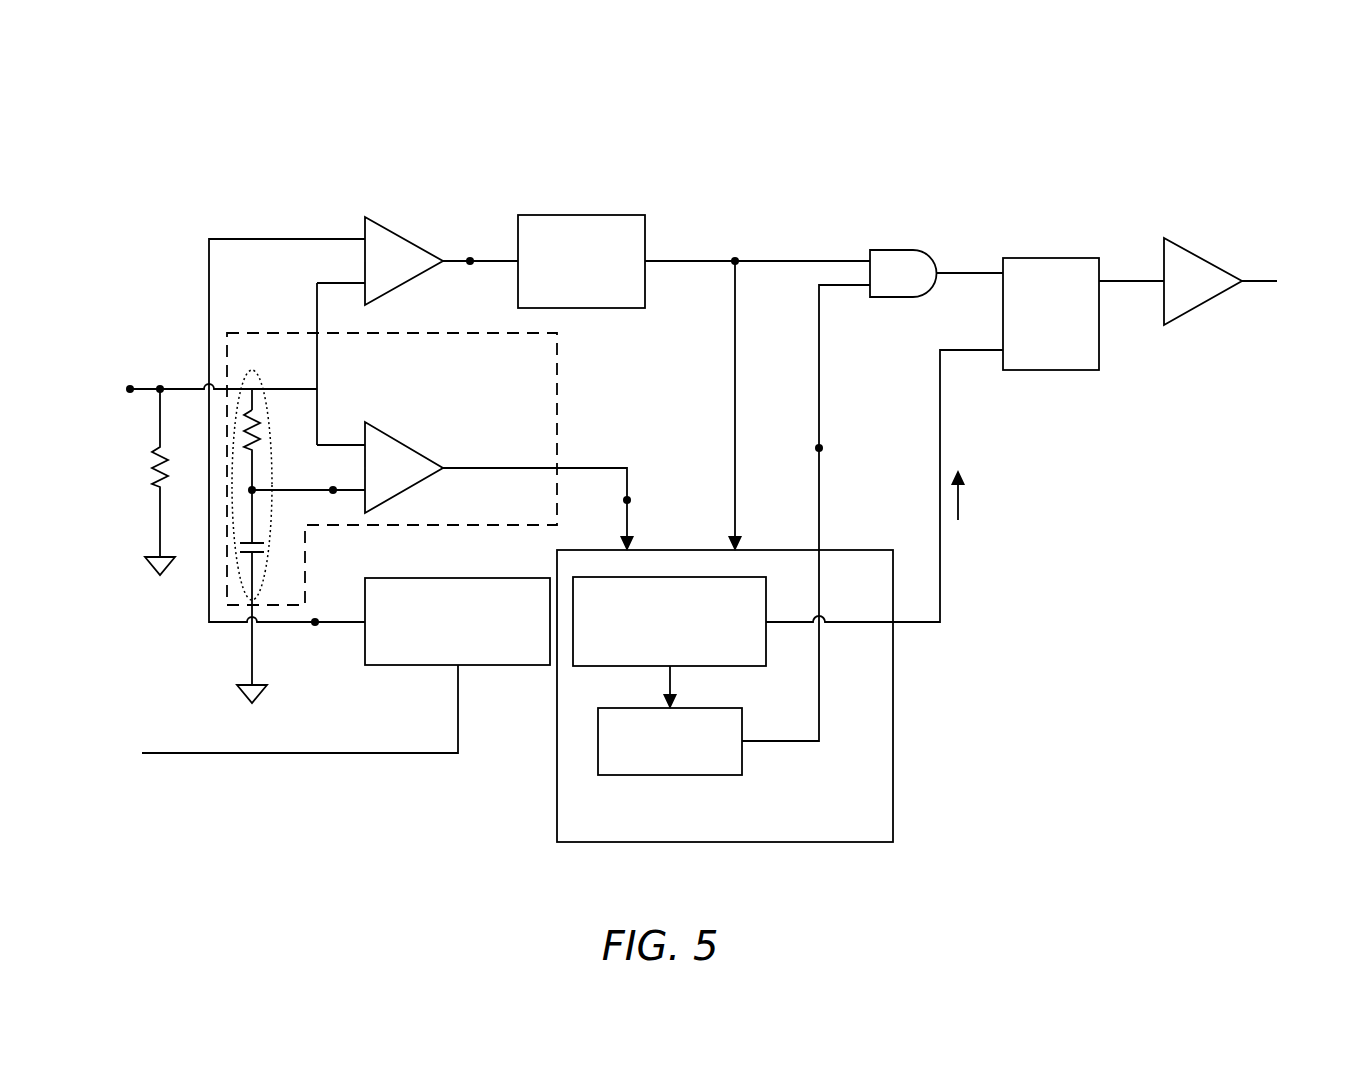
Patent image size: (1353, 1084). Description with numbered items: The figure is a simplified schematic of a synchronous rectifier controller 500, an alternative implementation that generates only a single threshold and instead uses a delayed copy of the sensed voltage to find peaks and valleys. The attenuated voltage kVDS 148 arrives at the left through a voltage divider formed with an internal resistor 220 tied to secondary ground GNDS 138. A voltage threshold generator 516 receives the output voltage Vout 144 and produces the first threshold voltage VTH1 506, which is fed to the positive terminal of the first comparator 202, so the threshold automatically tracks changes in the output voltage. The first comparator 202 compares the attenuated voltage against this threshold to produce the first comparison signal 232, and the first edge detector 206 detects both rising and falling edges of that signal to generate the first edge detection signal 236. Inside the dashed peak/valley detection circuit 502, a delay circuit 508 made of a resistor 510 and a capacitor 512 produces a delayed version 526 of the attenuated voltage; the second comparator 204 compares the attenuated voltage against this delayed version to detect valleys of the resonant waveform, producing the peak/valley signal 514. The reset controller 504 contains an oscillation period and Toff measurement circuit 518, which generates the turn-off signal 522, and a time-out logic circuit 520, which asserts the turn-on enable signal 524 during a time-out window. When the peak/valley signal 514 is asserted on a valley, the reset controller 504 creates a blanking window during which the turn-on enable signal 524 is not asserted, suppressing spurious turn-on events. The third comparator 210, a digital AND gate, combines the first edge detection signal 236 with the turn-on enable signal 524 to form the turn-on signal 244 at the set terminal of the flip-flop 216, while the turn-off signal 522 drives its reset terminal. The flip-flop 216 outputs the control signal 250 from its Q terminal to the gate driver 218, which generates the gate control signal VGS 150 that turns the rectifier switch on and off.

The synchronous rectifier controller 500 is at (976, 100).
The attenuated voltage kVDS 148 is at (128, 387).
The internal resistor 220 is at (157, 470).
The secondary ground GNDS 138 is at (196, 647).
The delay circuit 508 is at (184, 445).
The resistor 510 is at (243, 428).
The capacitor 512 is at (252, 555).
The delayed version of the attenuated voltage 526 is at (332, 488).
The first threshold voltage VTH1 506 is at (313, 625).
The output voltage Vout 144 is at (275, 722).
The first comparator 202 is at (405, 260).
The first comparison signal 232 is at (470, 255).
The first edge detector 206 is at (581, 261).
The first edge detection signal 236 is at (735, 255).
The third comparator 210 is at (893, 270).
The turn-on signal 244 is at (950, 270).
The flip-flop 216 is at (1067, 350).
The control signal 250 is at (1130, 270).
The gate driver 218 is at (1187, 315).
The gate control signal VGS 150 is at (1282, 285).
The peak/valley detection circuit 502 is at (557, 413).
The second comparator 204 is at (390, 467).
The peak/valley signal 514 is at (630, 498).
The turn-on enable signal 524 is at (822, 446).
The turn-off signal 522 is at (960, 500).
The reset controller 504 is at (725, 696).
The voltage threshold generator 516 is at (457, 621).
The oscillation period and Toff measurement circuit 518 is at (669, 643).
The time-out logic circuit 520 is at (670, 741).